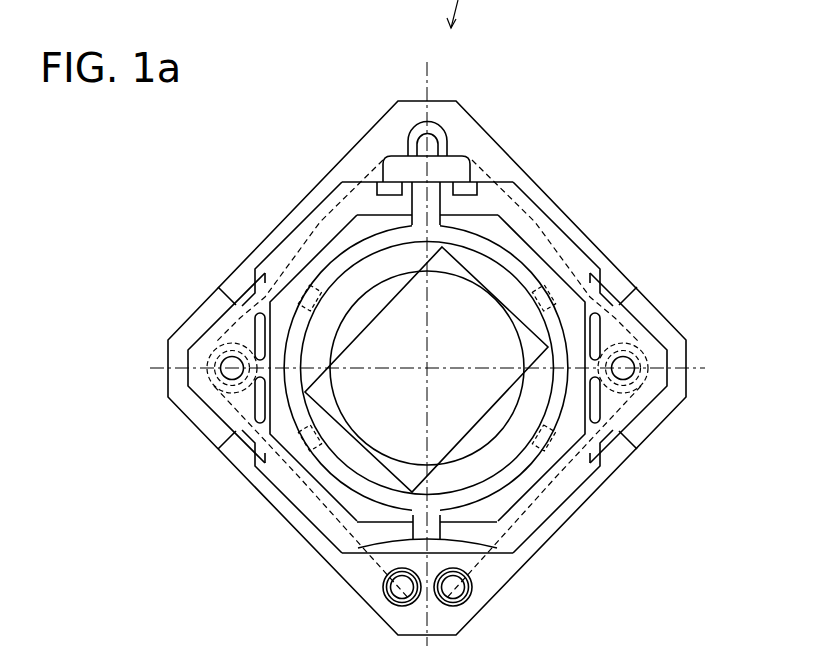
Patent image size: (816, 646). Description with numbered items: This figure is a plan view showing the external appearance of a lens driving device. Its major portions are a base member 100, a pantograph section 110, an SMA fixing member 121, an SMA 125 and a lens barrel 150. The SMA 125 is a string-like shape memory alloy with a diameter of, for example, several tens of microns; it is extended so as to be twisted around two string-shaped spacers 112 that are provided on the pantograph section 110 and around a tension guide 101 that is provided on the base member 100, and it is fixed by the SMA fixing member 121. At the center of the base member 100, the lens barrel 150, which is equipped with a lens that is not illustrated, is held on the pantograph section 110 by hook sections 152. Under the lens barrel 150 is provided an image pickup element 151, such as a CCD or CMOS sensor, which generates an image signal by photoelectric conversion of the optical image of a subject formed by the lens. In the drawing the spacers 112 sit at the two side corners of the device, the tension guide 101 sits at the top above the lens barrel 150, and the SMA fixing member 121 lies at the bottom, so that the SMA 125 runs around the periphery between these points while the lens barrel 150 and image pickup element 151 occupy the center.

The base member 100 is at (390, 135).
The tension guide 101 is at (398, 165).
The pantograph section 110 is at (538, 223).
The string-shaped spacers 112 is at (220, 347).
The SMA fixing member 121 is at (453, 603).
The SMA 125 is at (487, 567).
The lens barrel 150 is at (527, 270).
The image pickup element 151 is at (473, 428).
The hook sections 152 is at (436, 200).